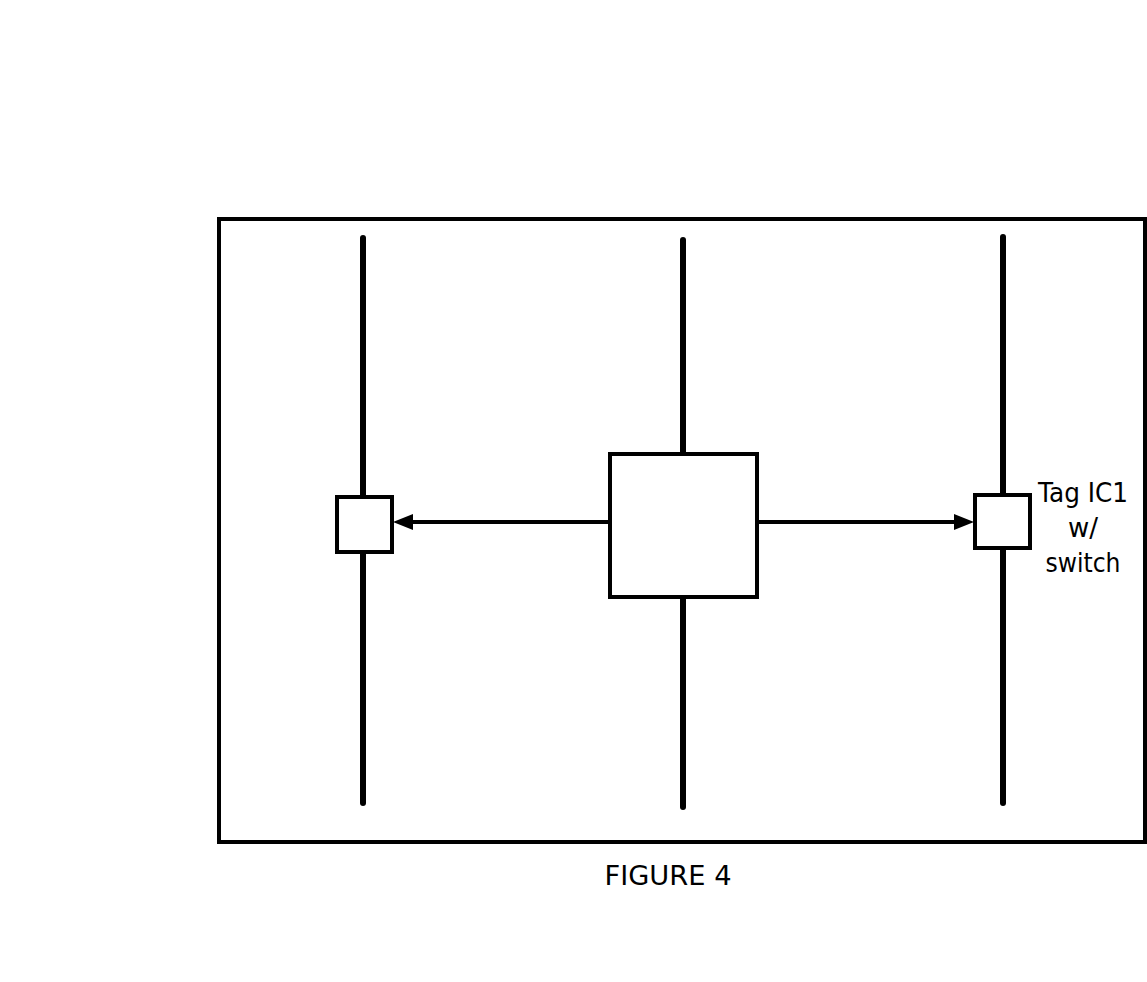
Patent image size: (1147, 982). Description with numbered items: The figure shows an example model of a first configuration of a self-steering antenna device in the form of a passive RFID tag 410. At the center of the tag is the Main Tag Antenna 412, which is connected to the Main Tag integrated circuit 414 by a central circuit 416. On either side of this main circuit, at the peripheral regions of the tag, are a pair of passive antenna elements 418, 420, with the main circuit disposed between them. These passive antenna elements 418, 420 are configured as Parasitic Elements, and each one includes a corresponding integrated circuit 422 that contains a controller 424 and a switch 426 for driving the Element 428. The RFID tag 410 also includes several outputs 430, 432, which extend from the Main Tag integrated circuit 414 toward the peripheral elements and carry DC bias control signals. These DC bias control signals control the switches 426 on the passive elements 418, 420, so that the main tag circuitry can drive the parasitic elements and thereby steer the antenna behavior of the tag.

The passive RFID tag 410 is at (353, 174).
The Main Tag Antenna 412 is at (680, 290).
The Main Tag integrated circuit 414 is at (648, 452).
The central circuit 416 is at (860, 382).
The passive antenna element 418 is at (364, 275).
The passive antenna element 420 is at (1006, 273).
The integrated circuit 422 is at (364, 540).
The controller 424 is at (347, 540).
The switch 426 is at (353, 523).
The Element 428 is at (361, 775).
The output 430 is at (567, 524).
The output 432 is at (897, 524).